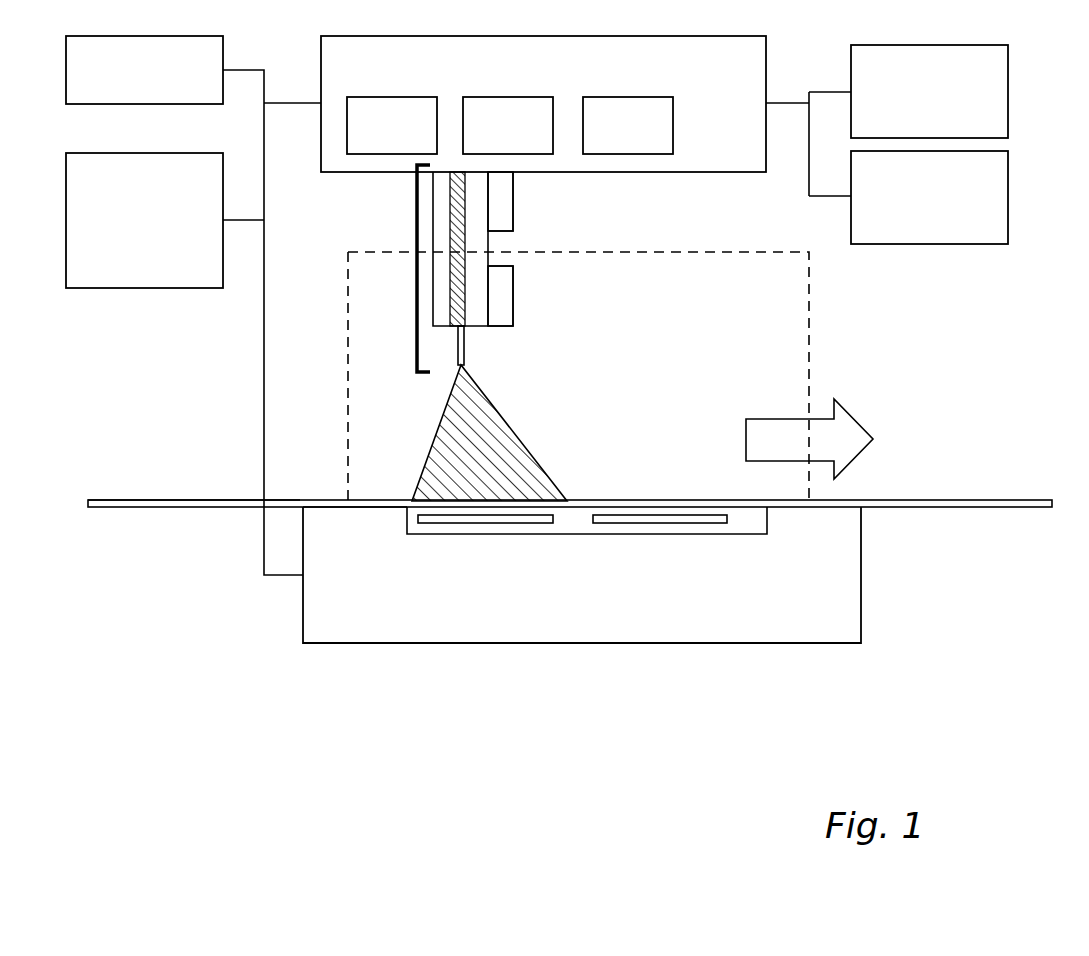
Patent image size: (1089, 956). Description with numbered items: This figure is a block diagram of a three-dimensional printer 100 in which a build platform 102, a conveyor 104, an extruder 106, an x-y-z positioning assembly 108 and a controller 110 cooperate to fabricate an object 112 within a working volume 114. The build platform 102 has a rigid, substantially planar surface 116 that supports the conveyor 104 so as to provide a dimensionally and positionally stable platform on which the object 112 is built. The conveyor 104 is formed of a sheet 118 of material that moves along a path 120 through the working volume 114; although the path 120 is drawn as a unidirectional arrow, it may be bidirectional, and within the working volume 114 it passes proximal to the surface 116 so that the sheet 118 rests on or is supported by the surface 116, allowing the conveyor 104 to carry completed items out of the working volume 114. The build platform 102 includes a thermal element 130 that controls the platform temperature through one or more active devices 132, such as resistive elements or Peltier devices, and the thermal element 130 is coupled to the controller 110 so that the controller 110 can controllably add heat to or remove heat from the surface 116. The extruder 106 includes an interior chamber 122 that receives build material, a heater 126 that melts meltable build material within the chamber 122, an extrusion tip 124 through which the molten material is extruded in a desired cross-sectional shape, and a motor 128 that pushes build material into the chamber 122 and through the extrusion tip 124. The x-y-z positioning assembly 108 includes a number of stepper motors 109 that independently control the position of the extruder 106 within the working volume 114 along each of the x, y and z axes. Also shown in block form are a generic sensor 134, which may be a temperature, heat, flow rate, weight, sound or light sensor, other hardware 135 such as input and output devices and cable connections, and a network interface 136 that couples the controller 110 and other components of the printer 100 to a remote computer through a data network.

The printer 100 is at (990, 354).
The build platform 102 is at (582, 575).
The conveyor 104 is at (148, 500).
The extruder 106 is at (417, 221).
The x-y-z positioning assembly 108 is at (543, 104).
The stepper motors 109 is at (510, 125).
The controller 110 is at (144, 220).
The object 112 is at (510, 407).
The working volume 114 is at (809, 372).
The surface 116 is at (385, 512).
The sheet of material 118 is at (898, 500).
The path 120 is at (809, 439).
The chamber 122 is at (438, 280).
The extrusion tip 124 is at (458, 345).
The heater 126 is at (513, 297).
The motor 128 is at (513, 202).
The thermal element 130 is at (546, 535).
The active devices 132 is at (678, 525).
The sensor 134 is at (929, 91).
The other hardware 135 is at (929, 197).
The network interface 136 is at (144, 70).